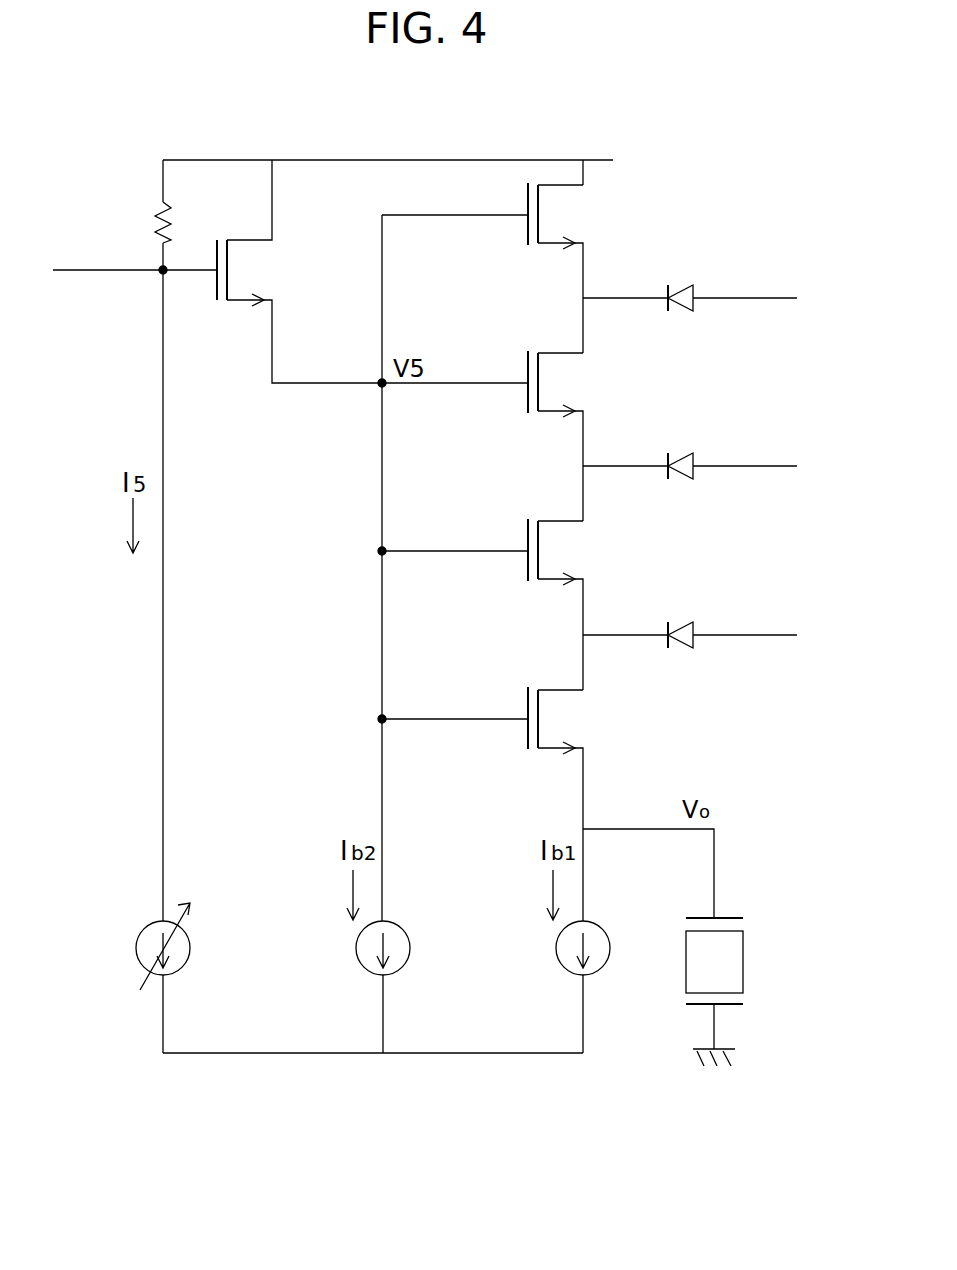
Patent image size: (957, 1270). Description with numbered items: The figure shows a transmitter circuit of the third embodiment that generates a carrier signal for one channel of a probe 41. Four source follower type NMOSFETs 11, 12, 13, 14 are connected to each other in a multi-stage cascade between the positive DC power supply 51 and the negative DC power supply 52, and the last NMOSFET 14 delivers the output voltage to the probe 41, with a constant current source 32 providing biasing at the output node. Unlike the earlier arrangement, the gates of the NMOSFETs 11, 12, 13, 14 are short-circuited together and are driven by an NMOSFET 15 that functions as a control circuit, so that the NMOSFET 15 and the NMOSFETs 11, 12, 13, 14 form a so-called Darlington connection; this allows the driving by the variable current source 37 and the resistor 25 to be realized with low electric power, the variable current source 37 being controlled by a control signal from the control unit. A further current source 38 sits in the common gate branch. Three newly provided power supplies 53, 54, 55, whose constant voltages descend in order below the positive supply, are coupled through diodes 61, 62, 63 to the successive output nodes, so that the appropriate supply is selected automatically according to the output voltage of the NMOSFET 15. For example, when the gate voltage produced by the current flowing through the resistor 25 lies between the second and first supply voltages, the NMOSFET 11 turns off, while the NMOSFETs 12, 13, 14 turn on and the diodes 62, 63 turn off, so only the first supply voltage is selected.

The NMOSFET 11 is at (560, 216).
The NMOSFET 12 is at (560, 384).
The NMOSFET 13 is at (560, 553).
The NMOSFET 14 is at (560, 720).
The NMOSFET 15 is at (250, 268).
The resistor 25 is at (155, 226).
The constant current source 32 is at (562, 948).
The variable current source 37 is at (140, 946).
The current source 38 is at (361, 948).
The probe 41 is at (743, 963).
The DC power supply 51 is at (492, 160).
The DC power supply 52 is at (480, 1053).
The power supply 53 is at (791, 297).
The power supply 54 is at (791, 465).
The power supply 55 is at (791, 634).
The diode 61 is at (676, 285).
The diode 62 is at (676, 453).
The diode 63 is at (676, 622).